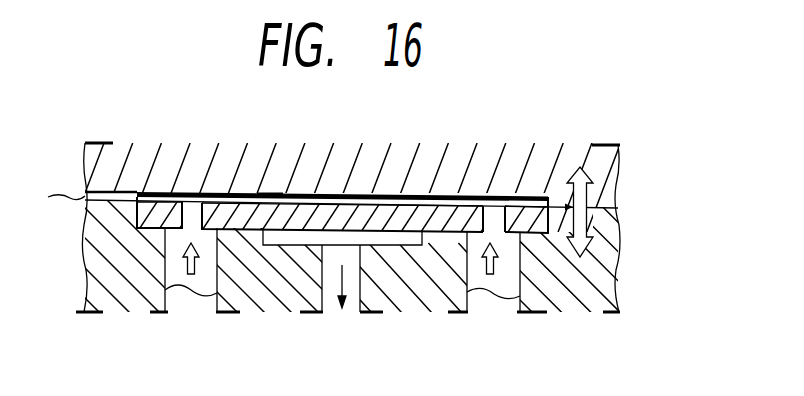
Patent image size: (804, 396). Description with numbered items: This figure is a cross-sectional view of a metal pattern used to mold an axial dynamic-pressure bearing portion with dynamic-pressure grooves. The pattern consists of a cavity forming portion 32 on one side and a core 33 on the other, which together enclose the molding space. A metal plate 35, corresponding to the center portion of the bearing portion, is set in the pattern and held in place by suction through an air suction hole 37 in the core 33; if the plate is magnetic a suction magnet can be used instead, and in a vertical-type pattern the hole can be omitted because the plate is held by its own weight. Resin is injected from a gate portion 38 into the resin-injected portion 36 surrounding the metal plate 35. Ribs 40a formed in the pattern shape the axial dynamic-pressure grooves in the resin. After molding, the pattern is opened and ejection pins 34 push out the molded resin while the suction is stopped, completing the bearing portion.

The cavity forming portion 32 is at (243, 168).
The core 33 is at (272, 302).
The ejection pins 34 is at (197, 288).
The metal plate 35 is at (357, 195).
The resin-injected portion 36 is at (480, 196).
The air suction hole 37 is at (335, 302).
The gate portion 38 is at (319, 195).
The ribs 40a is at (270, 185).